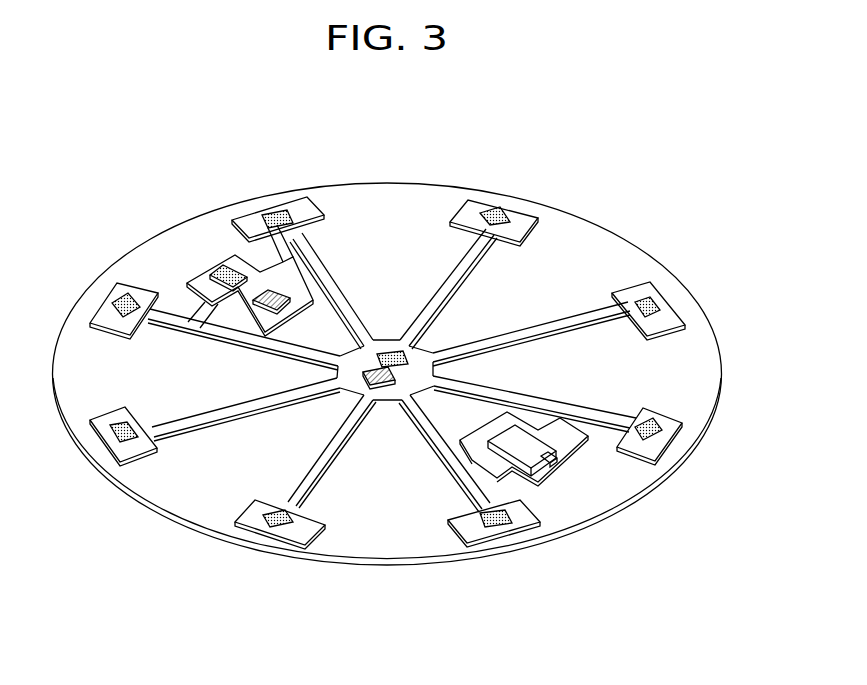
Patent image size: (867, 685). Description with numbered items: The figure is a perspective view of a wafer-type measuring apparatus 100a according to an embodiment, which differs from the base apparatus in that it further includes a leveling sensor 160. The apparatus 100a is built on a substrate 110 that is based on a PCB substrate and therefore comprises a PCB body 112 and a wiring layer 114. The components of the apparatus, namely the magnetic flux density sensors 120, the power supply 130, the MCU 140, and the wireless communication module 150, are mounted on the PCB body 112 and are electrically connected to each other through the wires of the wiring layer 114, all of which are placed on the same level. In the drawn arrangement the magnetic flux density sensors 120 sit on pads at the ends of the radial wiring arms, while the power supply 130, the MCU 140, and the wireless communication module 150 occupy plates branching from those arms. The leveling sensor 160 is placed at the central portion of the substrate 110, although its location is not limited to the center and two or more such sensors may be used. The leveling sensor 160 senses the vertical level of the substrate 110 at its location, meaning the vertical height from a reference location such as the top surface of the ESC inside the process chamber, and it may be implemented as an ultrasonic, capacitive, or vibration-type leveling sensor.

The wafer-type measuring apparatus 100a is at (617, 129).
The substrate 110 is at (730, 178).
The PCB body 112 is at (597, 257).
The wiring layer 114 is at (640, 292).
The magnetic flux density sensors 120 is at (389, 352).
The power supply 130 is at (578, 446).
The microcontroller unit (MCU) 140 is at (222, 267).
The wireless communication module 150 is at (268, 292).
The leveling sensor 160 is at (384, 398).